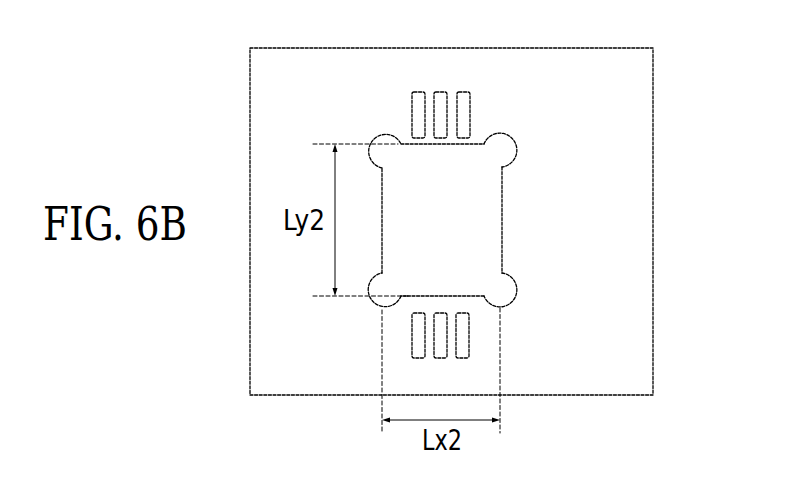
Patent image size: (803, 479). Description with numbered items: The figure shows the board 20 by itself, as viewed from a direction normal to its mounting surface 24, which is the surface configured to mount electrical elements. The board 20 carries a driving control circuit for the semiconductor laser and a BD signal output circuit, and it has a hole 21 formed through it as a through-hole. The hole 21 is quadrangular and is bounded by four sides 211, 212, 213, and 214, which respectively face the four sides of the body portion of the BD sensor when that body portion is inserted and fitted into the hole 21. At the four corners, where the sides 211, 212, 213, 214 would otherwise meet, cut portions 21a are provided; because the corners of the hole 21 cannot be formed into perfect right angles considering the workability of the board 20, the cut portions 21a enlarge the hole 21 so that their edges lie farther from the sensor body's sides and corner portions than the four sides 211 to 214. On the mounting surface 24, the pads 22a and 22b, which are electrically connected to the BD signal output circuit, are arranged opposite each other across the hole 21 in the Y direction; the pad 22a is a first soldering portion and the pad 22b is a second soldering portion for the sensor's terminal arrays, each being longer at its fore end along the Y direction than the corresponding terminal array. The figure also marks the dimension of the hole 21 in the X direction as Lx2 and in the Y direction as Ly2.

The board 20 is at (674, 196).
The mounting surface 24 is at (575, 60).
The hole 21 is at (490, 192).
The cut portions 21a is at (377, 140).
The side of the hole 211 is at (503, 220).
The side of the hole 212 is at (462, 297).
The side of the hole 213 is at (382, 258).
The side of the hole 214 is at (425, 137).
The pad 22a is at (441, 93).
The pad 22b is at (465, 343).